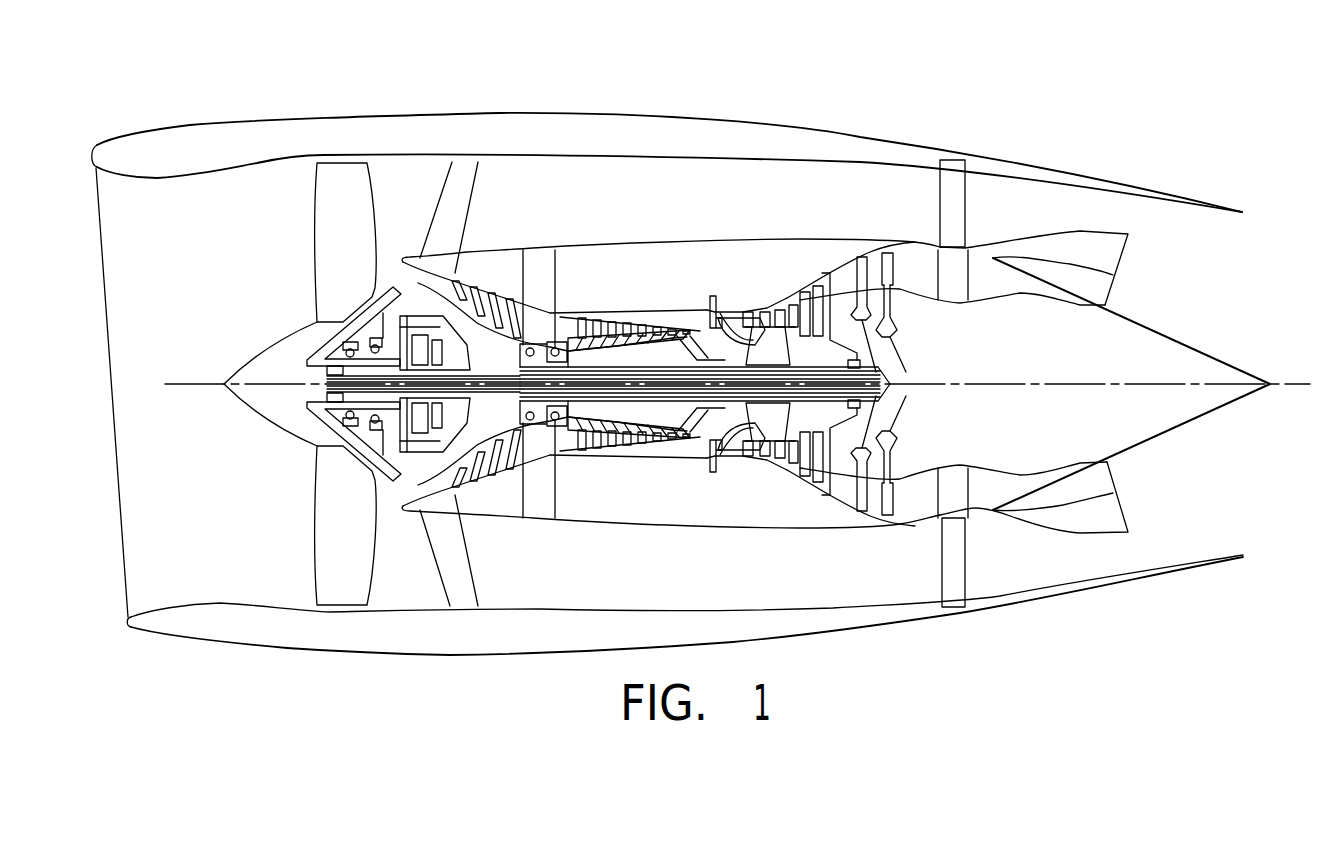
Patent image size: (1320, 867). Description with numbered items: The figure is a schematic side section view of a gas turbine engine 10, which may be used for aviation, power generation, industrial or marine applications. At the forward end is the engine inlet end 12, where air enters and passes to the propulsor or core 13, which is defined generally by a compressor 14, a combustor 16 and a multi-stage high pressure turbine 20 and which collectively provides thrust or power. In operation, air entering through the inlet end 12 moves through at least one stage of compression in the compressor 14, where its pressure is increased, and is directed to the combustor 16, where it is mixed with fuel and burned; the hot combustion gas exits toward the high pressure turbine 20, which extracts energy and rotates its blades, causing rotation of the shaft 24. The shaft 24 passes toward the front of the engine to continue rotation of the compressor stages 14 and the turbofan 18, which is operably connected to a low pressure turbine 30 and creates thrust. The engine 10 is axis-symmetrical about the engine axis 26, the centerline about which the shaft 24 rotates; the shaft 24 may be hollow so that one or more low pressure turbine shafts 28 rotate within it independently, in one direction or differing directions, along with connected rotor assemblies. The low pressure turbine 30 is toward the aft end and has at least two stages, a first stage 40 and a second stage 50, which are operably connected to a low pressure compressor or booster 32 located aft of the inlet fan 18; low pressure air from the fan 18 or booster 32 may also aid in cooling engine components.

The gas turbine engine 10 is at (1010, 86).
The engine inlet end 12 is at (108, 199).
The propulsor or core 13 is at (720, 196).
The compressor 14 is at (576, 300).
The combustor 16 is at (734, 296).
The turbofan 18 is at (296, 225).
The multi-stage high pressure turbine 20 is at (779, 295).
The shaft 24 is at (710, 447).
The engine axis 26 is at (1274, 382).
The low pressure turbine shaft 28 is at (874, 364).
The low pressure turbine 30 is at (912, 318).
The low pressure compressor or booster 32 is at (493, 268).
The first stage 40 is at (849, 296).
The second stage 50 is at (908, 300).